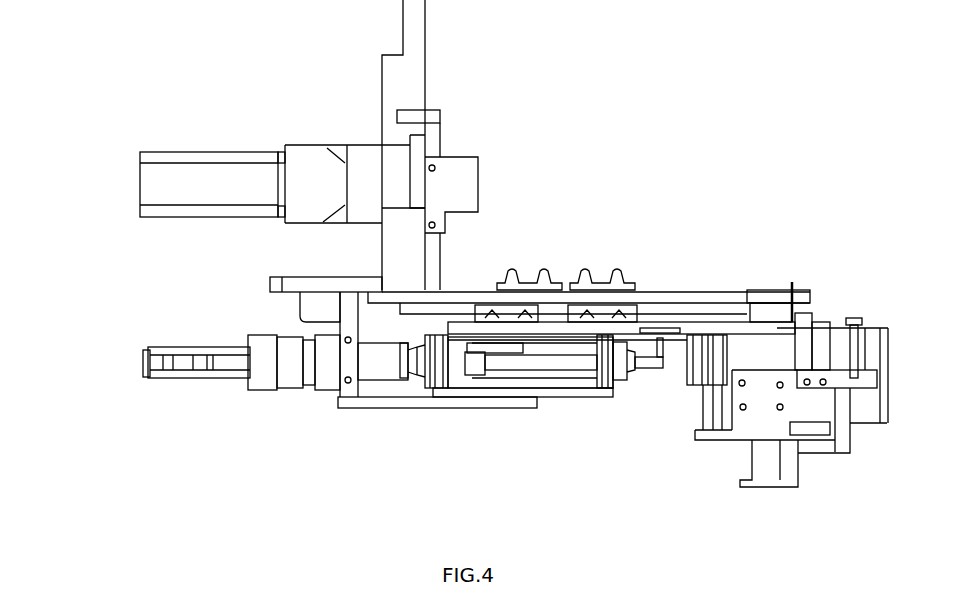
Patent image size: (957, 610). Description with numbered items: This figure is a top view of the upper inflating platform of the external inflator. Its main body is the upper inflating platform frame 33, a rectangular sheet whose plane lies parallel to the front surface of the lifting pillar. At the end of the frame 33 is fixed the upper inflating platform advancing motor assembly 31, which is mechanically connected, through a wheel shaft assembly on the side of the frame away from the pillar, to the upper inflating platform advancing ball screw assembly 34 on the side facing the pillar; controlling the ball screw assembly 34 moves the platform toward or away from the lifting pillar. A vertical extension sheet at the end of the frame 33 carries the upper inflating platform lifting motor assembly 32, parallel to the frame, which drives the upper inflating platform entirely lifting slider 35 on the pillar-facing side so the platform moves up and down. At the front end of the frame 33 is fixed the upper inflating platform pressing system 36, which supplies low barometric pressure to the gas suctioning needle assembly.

The upper inflating platform advancing motor assembly 31 is at (250, 357).
The upper inflating platform lifting motor assembly 32 is at (265, 193).
The upper inflating platform frame 33 is at (472, 293).
The upper inflating platform advancing ball screw assembly 34 is at (522, 317).
The upper inflating platform entirely lifting slider 35 is at (620, 268).
The upper inflating platform pressing system 36 is at (766, 403).